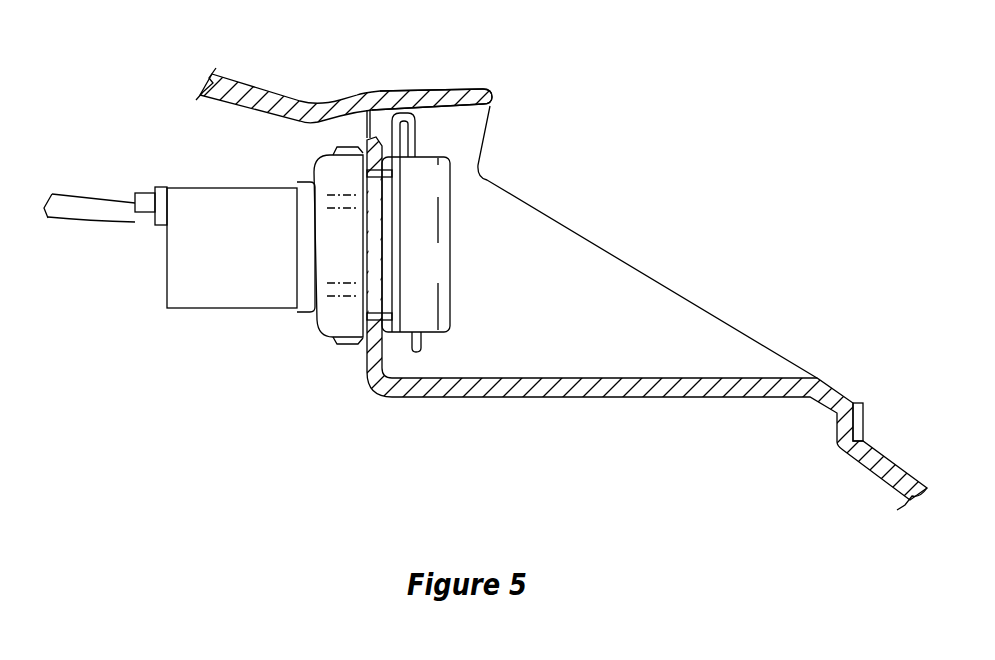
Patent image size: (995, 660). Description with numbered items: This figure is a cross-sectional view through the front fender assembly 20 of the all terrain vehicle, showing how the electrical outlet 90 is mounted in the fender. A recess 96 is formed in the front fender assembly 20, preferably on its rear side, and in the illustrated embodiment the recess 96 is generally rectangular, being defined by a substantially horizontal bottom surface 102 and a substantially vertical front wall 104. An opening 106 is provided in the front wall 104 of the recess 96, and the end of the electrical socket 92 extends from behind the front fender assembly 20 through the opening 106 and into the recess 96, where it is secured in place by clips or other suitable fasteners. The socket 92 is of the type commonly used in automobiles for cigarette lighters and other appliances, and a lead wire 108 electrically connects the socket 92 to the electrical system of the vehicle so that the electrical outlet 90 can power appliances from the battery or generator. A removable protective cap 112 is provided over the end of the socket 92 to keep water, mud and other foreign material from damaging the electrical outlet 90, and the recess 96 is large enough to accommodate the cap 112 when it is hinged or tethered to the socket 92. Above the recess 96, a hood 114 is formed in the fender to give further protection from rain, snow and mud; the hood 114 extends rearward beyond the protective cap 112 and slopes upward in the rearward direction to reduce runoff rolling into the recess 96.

The front fender assembly 20 is at (273, 92).
The hood 114 is at (462, 88).
The lead wire 108 is at (98, 200).
The electrical outlet 90 is at (462, 237).
The electrical socket 92 is at (278, 310).
The front wall 104 is at (368, 355).
The opening 106 is at (376, 176).
The protective cap 112 is at (438, 270).
The bottom surface 102 is at (558, 388).
The recess 96 is at (652, 290).